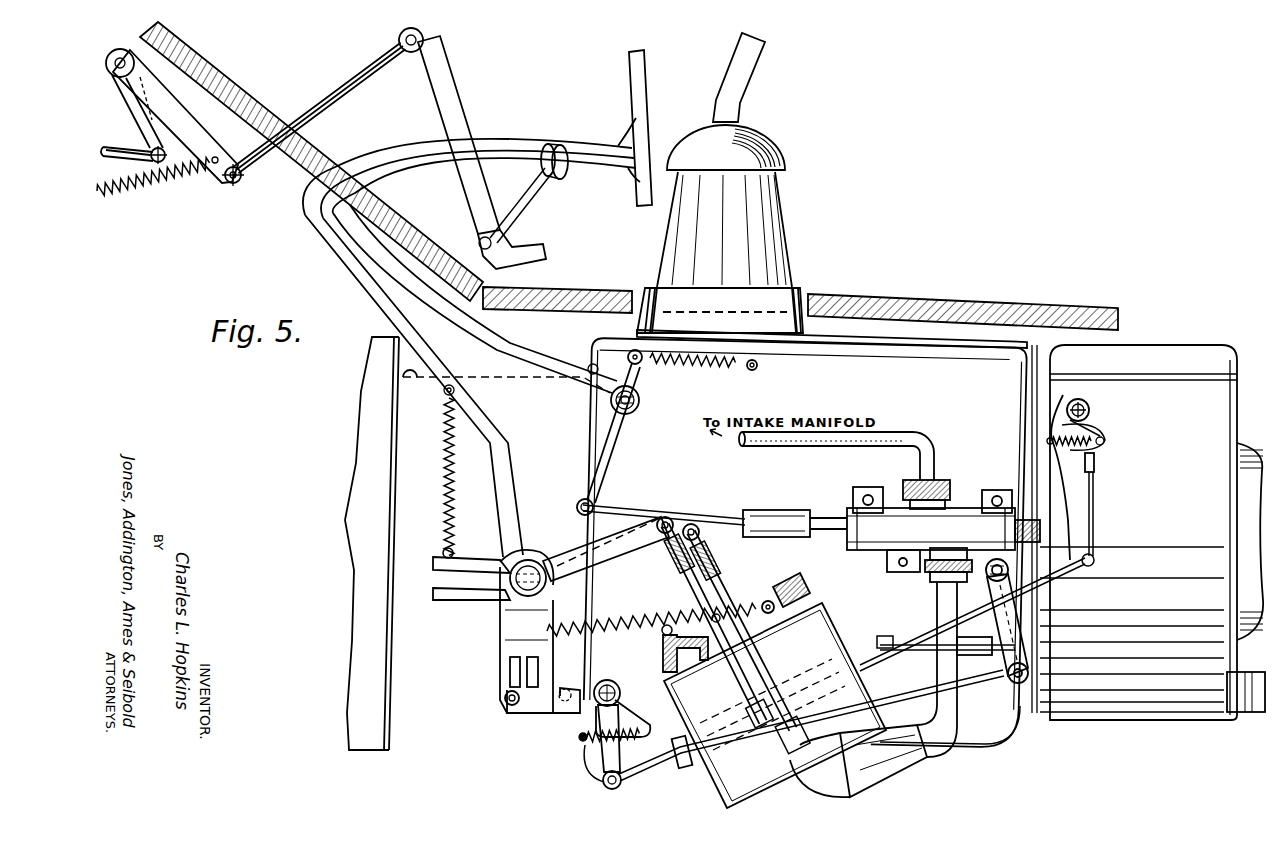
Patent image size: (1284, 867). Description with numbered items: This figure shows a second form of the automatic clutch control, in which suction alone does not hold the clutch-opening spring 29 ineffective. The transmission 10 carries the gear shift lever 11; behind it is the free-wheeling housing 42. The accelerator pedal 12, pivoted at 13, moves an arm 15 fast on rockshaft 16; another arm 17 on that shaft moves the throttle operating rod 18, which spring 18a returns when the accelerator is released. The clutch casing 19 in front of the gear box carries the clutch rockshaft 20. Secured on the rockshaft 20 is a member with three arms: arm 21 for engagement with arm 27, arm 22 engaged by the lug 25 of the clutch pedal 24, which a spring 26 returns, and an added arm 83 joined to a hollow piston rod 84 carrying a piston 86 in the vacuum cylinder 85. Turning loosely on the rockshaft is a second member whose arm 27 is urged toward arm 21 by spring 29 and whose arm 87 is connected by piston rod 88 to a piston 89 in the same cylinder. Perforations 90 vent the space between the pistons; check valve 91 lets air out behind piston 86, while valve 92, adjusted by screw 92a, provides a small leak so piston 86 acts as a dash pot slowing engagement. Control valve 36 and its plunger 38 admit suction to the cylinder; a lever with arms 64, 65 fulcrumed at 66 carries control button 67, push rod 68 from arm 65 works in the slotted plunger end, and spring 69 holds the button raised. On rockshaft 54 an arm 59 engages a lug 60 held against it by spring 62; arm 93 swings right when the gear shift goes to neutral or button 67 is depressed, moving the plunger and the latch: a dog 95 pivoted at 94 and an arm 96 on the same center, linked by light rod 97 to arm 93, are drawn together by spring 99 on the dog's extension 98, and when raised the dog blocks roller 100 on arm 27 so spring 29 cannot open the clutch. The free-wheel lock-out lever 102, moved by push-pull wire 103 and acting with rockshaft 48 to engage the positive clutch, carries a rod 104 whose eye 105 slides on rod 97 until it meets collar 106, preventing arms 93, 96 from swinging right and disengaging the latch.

The selective speed transmission 10 is at (913, 367).
The gear shift lever 11 is at (745, 60).
The accelerator pedal 12 is at (437, 72).
The pivot 13 is at (492, 240).
The arm 15 is at (187, 130).
The rockshaft 16 is at (120, 50).
The arm 17 is at (135, 118).
The throttle operating rod 18 is at (128, 160).
The spring 18a is at (157, 183).
The clutch casing 19 is at (333, 100).
The clutch rockshaft 20 is at (533, 565).
The arm 21 is at (545, 667).
The arm 22 is at (433, 597).
The clutch pedal 24 is at (500, 442).
The arm or lug 25 is at (433, 560).
The spring 26 is at (446, 490).
The arm 27 is at (505, 670).
The spring 29 is at (607, 623).
The control valve 36 is at (950, 515).
The valve plunger 38 is at (818, 511).
The housing 42 is at (1225, 408).
The rockshaft 48 is at (992, 578).
The rockshaft 54 is at (1090, 408).
The arm 59 is at (1062, 418).
The lug 60 is at (1095, 462).
The spring 62 is at (1098, 438).
The arm 64 is at (541, 362).
The arm 65 is at (613, 443).
The fulcrum 66 is at (640, 402).
The control button 67 is at (543, 173).
The push rod 68 is at (628, 515).
The spring 69 is at (679, 362).
The arm 83 is at (600, 553).
The piston rod 84 is at (700, 593).
The vacuum cylinder 85 is at (836, 627).
The piston 86 is at (815, 687).
The arm 87 is at (653, 553).
The piston rod 88 is at (733, 577).
The piston 89 is at (842, 725).
The perforations 90 is at (716, 622).
The check valve 91 is at (807, 593).
The valve 92 is at (663, 660).
The screw 92a is at (660, 633).
The arm 93 is at (1085, 502).
The pivot 94 is at (608, 680).
The swinging dog 95 is at (525, 713).
The arm 96 is at (600, 760).
The light rod 97 is at (652, 767).
The extension 98 is at (640, 721).
The spring 99 is at (580, 738).
The roller 100 is at (506, 700).
The lever 102 is at (1040, 608).
The push-pull wire 103 is at (995, 642).
The rod 104 is at (975, 688).
The eye 105 is at (686, 767).
The collar 106 is at (622, 782).